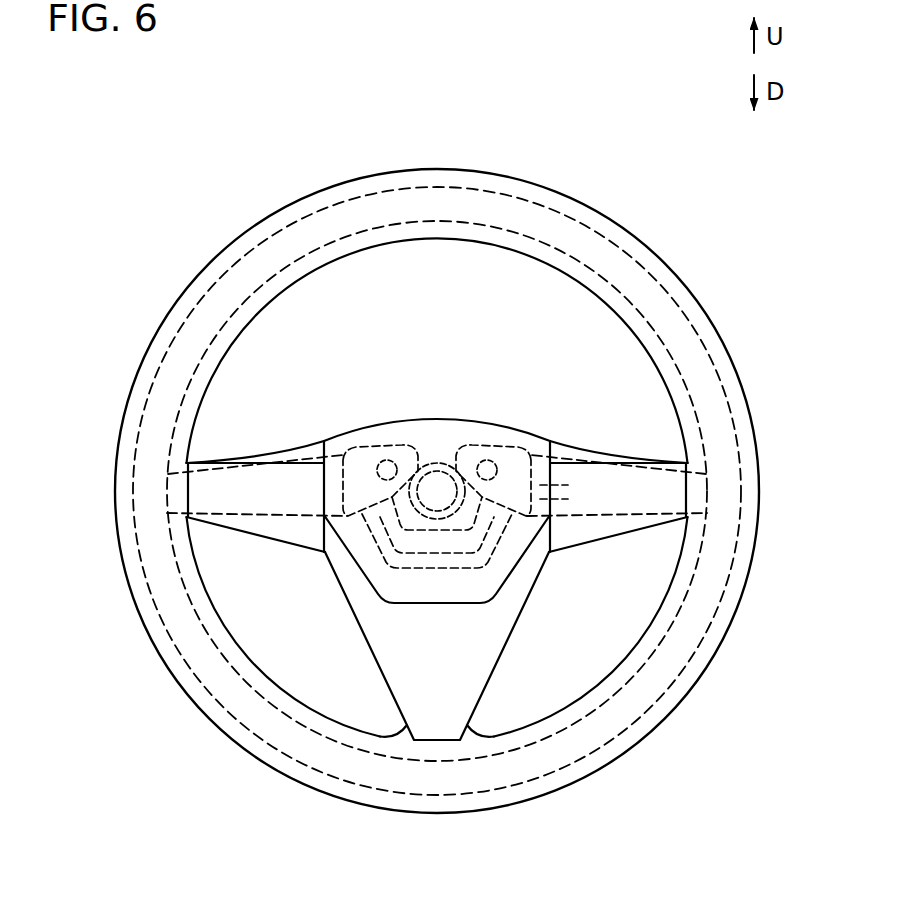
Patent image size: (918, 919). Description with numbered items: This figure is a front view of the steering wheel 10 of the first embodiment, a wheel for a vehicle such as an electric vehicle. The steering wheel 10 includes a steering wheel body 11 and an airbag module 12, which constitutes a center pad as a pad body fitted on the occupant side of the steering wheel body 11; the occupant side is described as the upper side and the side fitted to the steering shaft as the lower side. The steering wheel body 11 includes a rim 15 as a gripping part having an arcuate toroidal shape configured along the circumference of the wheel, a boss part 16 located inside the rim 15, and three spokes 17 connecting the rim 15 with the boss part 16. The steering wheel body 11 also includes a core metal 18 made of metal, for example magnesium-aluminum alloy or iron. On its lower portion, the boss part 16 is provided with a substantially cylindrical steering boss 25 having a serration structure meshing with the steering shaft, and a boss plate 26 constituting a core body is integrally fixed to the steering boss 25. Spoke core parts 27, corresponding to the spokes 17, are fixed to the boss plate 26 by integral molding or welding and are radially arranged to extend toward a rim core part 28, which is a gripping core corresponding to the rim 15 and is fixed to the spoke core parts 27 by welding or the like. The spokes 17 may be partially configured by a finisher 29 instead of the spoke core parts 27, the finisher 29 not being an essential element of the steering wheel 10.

The steering wheel 10 is at (502, 152).
The steering wheel body 11 is at (657, 255).
The airbag module 12 is at (456, 436).
The rim 15 is at (711, 323).
The boss part 16 is at (360, 419).
The spokes 17 is at (277, 462).
The core metal 18 is at (729, 588).
The steering boss 25 is at (432, 463).
The boss plate 26 is at (514, 441).
The spoke core parts 27 is at (267, 515).
The rim core part 28 is at (729, 403).
The finisher 29 is at (502, 648).